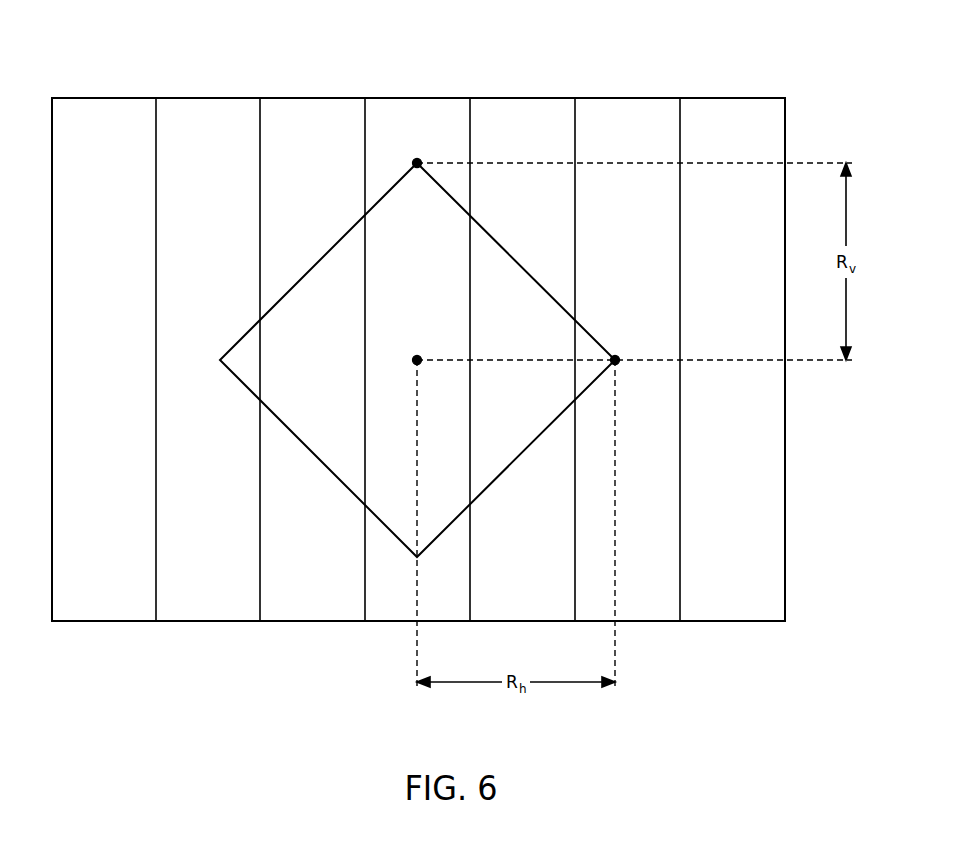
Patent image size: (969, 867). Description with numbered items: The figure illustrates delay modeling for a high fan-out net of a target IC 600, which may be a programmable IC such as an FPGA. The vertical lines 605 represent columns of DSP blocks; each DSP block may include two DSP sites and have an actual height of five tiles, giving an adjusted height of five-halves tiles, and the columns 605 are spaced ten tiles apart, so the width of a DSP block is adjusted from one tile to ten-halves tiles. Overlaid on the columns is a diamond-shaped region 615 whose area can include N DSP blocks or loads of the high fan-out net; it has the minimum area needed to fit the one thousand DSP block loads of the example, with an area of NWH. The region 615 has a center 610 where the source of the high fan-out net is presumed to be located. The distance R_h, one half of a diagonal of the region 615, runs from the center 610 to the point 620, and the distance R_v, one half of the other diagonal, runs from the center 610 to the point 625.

The target IC 600 is at (468, 38).
The vertical lines 605 is at (156, 120).
The center 610 is at (417, 357).
The region 615 is at (503, 243).
The point 620 is at (615, 357).
The point 625 is at (417, 160).